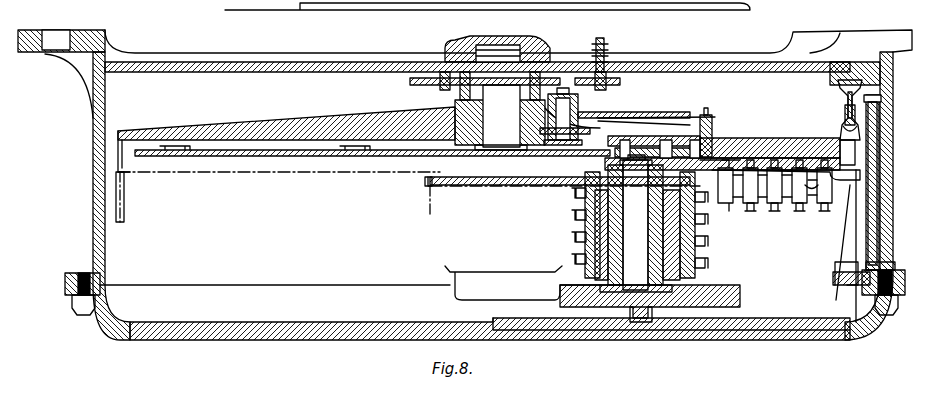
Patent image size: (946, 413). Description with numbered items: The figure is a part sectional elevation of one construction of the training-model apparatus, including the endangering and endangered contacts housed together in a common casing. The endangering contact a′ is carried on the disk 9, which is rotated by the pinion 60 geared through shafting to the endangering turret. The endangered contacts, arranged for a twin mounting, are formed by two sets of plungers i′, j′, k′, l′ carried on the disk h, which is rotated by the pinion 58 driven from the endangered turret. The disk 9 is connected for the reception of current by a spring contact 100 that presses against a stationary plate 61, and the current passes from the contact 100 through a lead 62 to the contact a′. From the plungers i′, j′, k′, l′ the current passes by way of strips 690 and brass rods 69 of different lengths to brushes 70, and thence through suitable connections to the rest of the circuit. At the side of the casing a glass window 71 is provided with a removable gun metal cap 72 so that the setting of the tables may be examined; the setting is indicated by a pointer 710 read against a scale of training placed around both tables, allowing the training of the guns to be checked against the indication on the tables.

The disk 9 is at (350, 128).
The stationary plate 61 is at (586, 78).
The spring contact 100 is at (572, 90).
The lead 62 is at (676, 117).
The strips 690 is at (703, 113).
The plunger l′ is at (748, 160).
The plunger k′ is at (772, 160).
The plunger j′ is at (797, 160).
The plunger i′ is at (822, 160).
The gun metal cap 72 is at (880, 118).
The endangering contact a′ is at (700, 154).
The glass window 71 is at (878, 188).
The pointer 710 is at (848, 240).
The pinion 60 is at (128, 198).
The pinion 58 is at (434, 208).
The disk h is at (545, 180).
The brushes 70 is at (578, 212).
The brass rods 69 is at (582, 240).